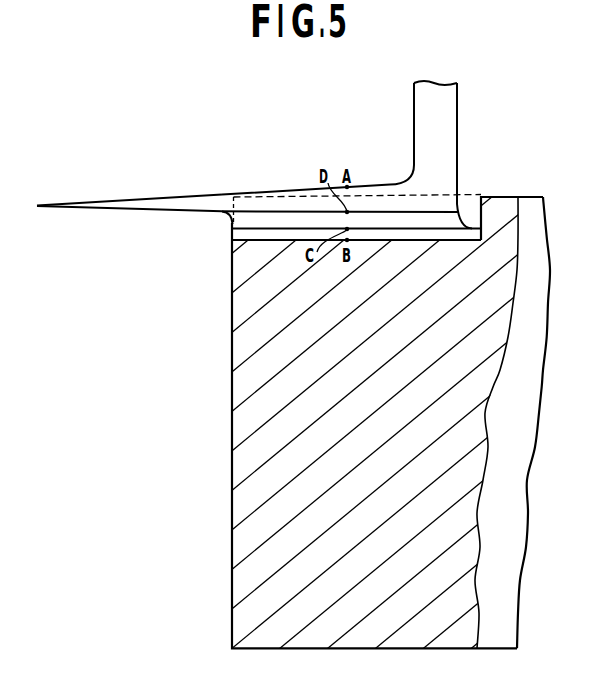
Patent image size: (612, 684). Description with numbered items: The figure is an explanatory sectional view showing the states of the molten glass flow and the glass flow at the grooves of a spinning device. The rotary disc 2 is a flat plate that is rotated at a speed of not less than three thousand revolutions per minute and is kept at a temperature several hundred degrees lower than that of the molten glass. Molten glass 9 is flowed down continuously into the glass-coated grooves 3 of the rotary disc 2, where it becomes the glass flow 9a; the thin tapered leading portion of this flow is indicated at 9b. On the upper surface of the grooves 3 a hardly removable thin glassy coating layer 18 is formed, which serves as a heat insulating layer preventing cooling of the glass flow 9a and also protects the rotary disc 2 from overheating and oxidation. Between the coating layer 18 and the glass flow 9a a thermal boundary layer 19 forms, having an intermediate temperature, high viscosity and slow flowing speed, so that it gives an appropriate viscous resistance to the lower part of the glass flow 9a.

The rotary disc 2 is at (232, 422).
The grooves 3 is at (472, 202).
The molten glass 9 is at (443, 148).
The glass flow 9a is at (279, 198).
The tapered blade tip 9b is at (52, 205).
The coating layer 18 is at (258, 238).
The thermal boundary layer 19 is at (237, 218).